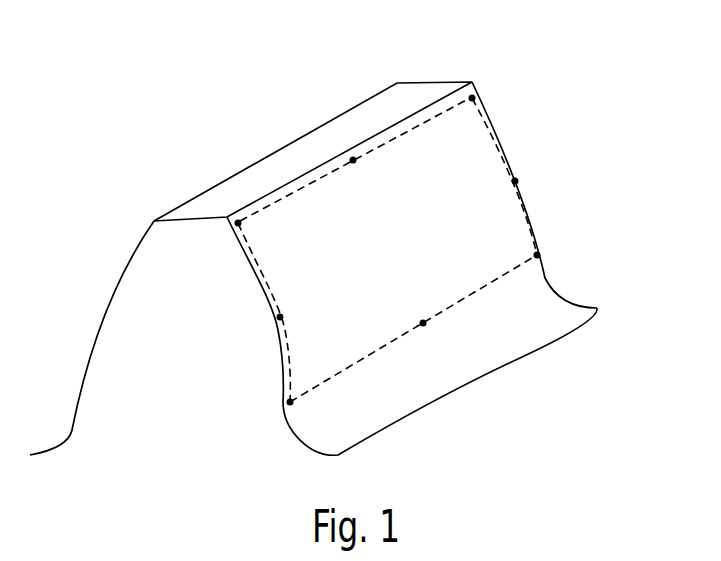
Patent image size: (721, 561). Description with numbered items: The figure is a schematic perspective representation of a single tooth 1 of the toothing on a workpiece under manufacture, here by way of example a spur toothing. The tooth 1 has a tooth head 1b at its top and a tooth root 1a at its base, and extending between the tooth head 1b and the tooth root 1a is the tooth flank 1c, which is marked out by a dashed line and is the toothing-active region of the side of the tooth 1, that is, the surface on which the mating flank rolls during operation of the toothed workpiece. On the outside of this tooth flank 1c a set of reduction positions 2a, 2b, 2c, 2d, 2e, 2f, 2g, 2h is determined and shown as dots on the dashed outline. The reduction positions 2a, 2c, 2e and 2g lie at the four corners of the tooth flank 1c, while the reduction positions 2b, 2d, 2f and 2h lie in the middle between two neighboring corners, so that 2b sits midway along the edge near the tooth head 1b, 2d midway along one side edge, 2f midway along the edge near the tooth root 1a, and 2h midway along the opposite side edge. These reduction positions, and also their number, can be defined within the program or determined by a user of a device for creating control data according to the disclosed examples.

The tooth 1 is at (138, 307).
The tooth root 1a is at (555, 328).
The tooth head 1b is at (415, 97).
The tooth flank 1c is at (488, 162).
The reduction position 2a is at (230, 224).
The reduction position 2b is at (352, 158).
The reduction position 2c is at (473, 93).
The reduction position 2d is at (522, 181).
The reduction position 2e is at (542, 255).
The reduction position 2f is at (426, 324).
The reduction position 2g is at (282, 403).
The reduction position 2h is at (275, 318).